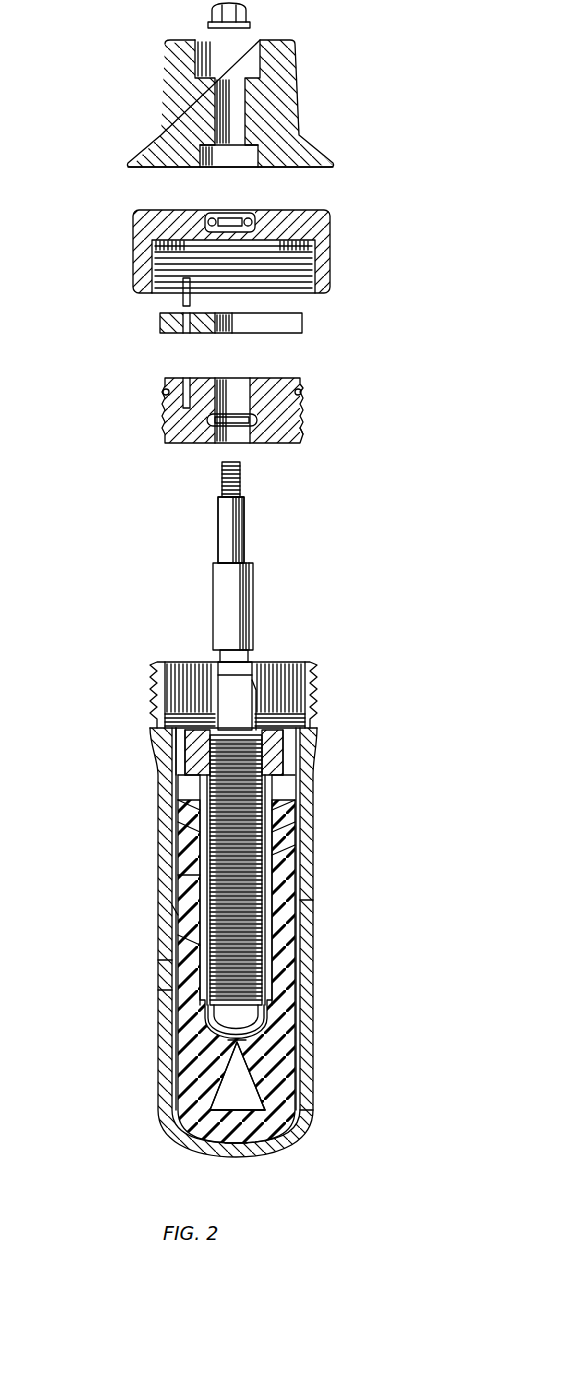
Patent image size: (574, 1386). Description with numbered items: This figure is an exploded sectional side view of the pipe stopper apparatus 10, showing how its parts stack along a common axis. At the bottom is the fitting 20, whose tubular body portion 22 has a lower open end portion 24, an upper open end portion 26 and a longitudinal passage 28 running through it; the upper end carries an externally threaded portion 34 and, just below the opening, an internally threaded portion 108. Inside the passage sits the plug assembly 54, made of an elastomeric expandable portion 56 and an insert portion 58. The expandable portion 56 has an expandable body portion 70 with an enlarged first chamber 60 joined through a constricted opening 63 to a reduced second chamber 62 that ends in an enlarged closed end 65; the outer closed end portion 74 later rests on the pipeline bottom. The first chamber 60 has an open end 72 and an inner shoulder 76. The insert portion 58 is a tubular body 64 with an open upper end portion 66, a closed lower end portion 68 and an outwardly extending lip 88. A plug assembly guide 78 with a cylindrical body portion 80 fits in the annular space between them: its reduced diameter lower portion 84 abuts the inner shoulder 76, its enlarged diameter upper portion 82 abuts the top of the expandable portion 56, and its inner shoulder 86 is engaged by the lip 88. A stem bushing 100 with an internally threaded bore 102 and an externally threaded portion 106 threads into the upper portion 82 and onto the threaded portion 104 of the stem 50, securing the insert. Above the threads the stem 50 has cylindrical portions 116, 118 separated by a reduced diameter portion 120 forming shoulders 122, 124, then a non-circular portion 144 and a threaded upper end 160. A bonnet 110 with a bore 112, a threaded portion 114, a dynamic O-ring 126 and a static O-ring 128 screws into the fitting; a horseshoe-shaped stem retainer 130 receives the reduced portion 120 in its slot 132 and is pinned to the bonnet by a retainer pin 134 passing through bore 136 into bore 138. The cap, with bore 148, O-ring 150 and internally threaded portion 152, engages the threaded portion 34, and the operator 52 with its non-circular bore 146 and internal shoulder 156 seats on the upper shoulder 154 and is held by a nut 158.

The pipe stopper apparatus 10 is at (148, 60).
The fitting 20 is at (336, 937).
The tubular body portion 22 is at (165, 997).
The lower open end portion 24 is at (312, 1118).
The upper open end portion 26 is at (312, 668).
The longitudinal passage 28 is at (180, 915).
The externally threaded portion 34 is at (315, 685).
The stem 50 is at (204, 574).
The operator 52 is at (296, 78).
The plug assembly 54 is at (158, 966).
The expandable portion 56 is at (196, 940).
The insert portion 58 is at (313, 910).
The enlarged first chamber 60 is at (263, 975).
The reduced second chamber 62 is at (258, 1072).
The constricted opening 63 is at (234, 1041).
The tubular body 64 is at (273, 885).
The enlarged closed end 65 is at (222, 1122).
The open upper end portion 66 is at (285, 797).
The closed lower end portion 68 is at (262, 1025).
The expandable body portion 70 is at (226, 1074).
The open end 72 is at (178, 830).
The closed end portion 74 is at (235, 1133).
The inner shoulder 76 is at (185, 880).
The plug assembly guide 78 is at (268, 838).
The cylindrical body portion 80 is at (183, 808).
The enlarged diameter upper portion 82 is at (288, 763).
The reduced diameter lower portion 84 is at (279, 860).
The inner shoulder 86 is at (189, 790).
The outwardly extending lip 88 is at (292, 782).
The stem bushing 100 is at (176, 735).
The internally threaded bore 102 is at (284, 748).
The threaded portion 104 is at (276, 822).
The externally threaded portion 106 is at (196, 748).
The internally threaded portion 108 is at (306, 720).
The bonnet 110 is at (293, 415).
The bore 112 is at (250, 400).
The threaded portion 114 is at (302, 428).
The cylindrical portion 116 is at (257, 695).
The cylindrical portion 118 is at (254, 585).
The reduced diameter portion 120 is at (223, 660).
The shoulder 122 is at (232, 648).
The shoulder 124 is at (220, 674).
The O-ring 126 is at (253, 428).
The O-ring 128 is at (301, 392).
The stem retainer 130 is at (302, 322).
The slot 132 is at (223, 330).
The retainer pin 134 is at (183, 300).
The bore 136 is at (186, 331).
The bore 138 is at (190, 385).
The non-circular portion 144 is at (218, 520).
The non-circular bore 146 is at (216, 120).
The bore 148 is at (251, 221).
The O-ring 150 is at (211, 220).
The internally threaded portion 152 is at (318, 268).
The upper shoulder 154 is at (244, 565).
The internal shoulder 156 is at (246, 150).
The nut 158 is at (250, 8).
The threaded upper end 160 is at (222, 476).